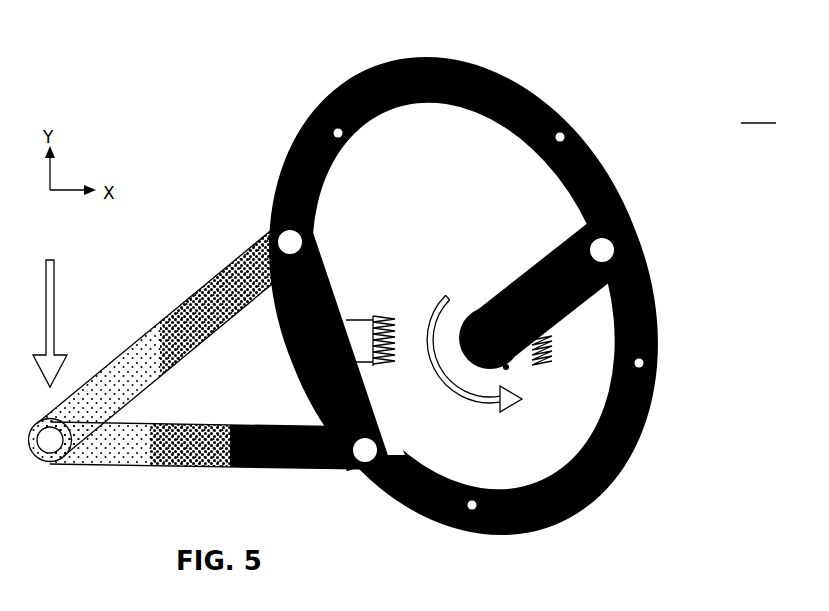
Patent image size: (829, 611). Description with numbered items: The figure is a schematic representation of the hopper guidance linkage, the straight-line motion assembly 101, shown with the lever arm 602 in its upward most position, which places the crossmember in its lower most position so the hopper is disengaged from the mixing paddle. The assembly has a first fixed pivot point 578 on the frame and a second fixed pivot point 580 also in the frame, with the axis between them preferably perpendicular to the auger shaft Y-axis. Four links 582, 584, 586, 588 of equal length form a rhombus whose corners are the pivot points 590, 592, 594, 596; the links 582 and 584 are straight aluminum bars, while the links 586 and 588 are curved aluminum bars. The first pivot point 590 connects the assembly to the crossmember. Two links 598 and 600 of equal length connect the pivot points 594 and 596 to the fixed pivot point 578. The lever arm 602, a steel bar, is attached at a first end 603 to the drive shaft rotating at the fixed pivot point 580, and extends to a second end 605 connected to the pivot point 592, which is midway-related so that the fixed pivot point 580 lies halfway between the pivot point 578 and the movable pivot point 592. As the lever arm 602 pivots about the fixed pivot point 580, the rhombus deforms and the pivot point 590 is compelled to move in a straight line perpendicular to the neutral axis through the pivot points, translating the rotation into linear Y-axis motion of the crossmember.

The positioning mechanism 101 is at (404, 298).
The first fixed pivot point 578 is at (368, 372).
The second fixed pivot point 580 is at (502, 398).
The link 582 is at (145, 333).
The link 584 is at (198, 470).
The link 586 is at (504, 277).
The link 588 is at (634, 449).
The first pivot point 590 is at (52, 462).
The pivot point 592 is at (656, 218).
The pivot point 594 is at (362, 477).
The pivot point 596 is at (270, 227).
The link 598 is at (303, 347).
The link 600 is at (292, 312).
The lever arm 602 is at (577, 324).
The first end 603 is at (509, 375).
The second end 605 is at (636, 238).